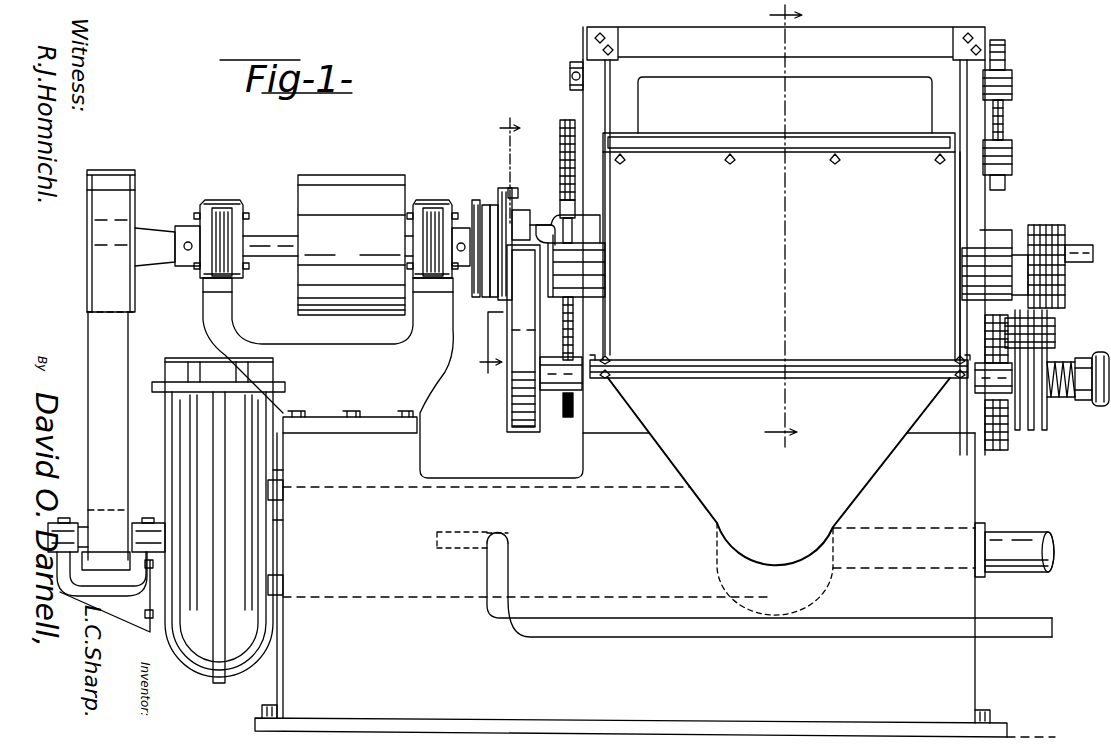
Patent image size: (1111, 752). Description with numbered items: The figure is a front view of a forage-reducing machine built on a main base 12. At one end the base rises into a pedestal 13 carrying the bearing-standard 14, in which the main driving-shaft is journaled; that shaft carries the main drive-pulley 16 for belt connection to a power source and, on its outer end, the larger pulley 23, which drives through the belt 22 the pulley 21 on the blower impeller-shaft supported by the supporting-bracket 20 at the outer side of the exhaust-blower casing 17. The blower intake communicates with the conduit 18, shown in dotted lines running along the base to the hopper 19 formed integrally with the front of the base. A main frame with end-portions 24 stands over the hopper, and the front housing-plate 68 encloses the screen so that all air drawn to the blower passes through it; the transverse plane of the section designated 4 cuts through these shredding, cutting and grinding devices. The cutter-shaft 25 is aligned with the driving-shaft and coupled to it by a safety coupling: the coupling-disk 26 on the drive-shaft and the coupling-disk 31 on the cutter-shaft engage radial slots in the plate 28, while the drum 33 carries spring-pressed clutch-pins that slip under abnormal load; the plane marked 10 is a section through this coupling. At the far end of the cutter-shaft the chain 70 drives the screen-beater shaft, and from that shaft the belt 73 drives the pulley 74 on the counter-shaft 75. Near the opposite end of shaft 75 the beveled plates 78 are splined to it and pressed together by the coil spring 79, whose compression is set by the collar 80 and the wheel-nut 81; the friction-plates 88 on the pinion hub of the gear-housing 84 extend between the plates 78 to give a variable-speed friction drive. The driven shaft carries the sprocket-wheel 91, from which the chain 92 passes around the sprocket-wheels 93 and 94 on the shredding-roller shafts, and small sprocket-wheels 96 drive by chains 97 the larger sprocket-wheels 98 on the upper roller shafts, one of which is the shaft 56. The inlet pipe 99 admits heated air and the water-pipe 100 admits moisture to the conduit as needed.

The detail transverse vertical section 4 is at (774, 226).
The transverse section line 10 is at (493, 246).
The main base 12 is at (655, 585).
The pedestal 13 is at (350, 437).
The bearing-standard 14 is at (393, 269).
The main drive-pulley 16 is at (340, 185).
The exhaust-blower casing 17 is at (172, 440).
The conduit 18 is at (360, 597).
The hopper 19 is at (780, 485).
The supporting-bracket 20 is at (105, 592).
The pulley 21 is at (130, 517).
The belt 22 is at (108, 436).
The larger pulley 23 is at (135, 305).
The end-portions of main frame 24 is at (583, 108).
The cutter-shaft 25 is at (1078, 262).
The coupling-disk 26 is at (470, 298).
The plate 28 is at (474, 200).
The coupling-disk 31 is at (488, 205).
The drum 33 is at (520, 226).
The shaft 56 is at (570, 80).
The front housing-plate 68 is at (781, 218).
The chain 70 is at (1055, 225).
The belt 73 is at (523, 338).
The pulley 74 is at (507, 413).
The shaft 75 is at (572, 380).
The plates 78 is at (1018, 430).
The coil spring 79 is at (1062, 362).
The collar 80 is at (1083, 400).
The wheel-nut 81 is at (1100, 406).
The gear-housing 84 is at (997, 450).
The friction-plates 88 is at (1050, 318).
The sprocket-wheel 91 is at (562, 405).
The chain 92 is at (573, 330).
The sprocket-wheel 93 is at (560, 205).
The sprocket-wheel 94 is at (560, 133).
The small sprocket-wheels 96 is at (1012, 148).
The chains 97 is at (1003, 115).
The larger sprocket-wheels 98 is at (1012, 60).
The inlet pipe 99 is at (1010, 532).
The water-pipe 100 is at (645, 637).